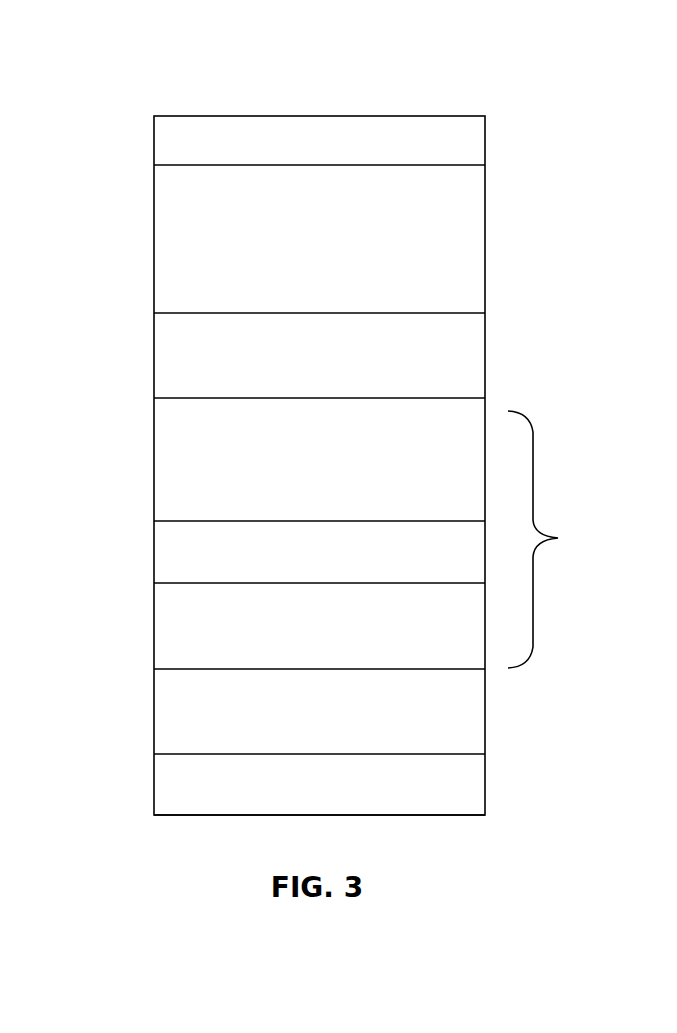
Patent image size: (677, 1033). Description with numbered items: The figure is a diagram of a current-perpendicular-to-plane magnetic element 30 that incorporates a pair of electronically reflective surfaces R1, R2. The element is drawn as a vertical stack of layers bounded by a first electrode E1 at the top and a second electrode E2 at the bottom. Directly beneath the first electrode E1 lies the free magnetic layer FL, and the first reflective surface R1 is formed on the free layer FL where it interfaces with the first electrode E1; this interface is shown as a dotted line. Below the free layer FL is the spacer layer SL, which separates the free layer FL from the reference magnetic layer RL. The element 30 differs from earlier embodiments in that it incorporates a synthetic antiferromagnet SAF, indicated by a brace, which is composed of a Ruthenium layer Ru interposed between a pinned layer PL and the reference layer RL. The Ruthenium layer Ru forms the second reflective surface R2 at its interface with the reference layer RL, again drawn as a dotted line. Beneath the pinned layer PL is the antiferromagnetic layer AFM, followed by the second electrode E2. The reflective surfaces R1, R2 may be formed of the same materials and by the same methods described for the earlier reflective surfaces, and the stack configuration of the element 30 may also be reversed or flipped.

The magnetic element 30 is at (354, 420).
The first reflective surface R1 is at (183, 165).
The second reflective surface R2 is at (192, 521).
The first electrode E1 is at (319, 146).
The free magnetic layer FL is at (319, 276).
The spacer layer SL is at (319, 374).
The reference magnetic layer RL is at (319, 478).
The Ruthenium layer Ru is at (319, 558).
The pinned layer PL is at (319, 643).
The antiferromagnetic layer AFM is at (319, 722).
The second electrode E2 is at (319, 790).
The synthetic antiferromagnet SAF is at (578, 539).